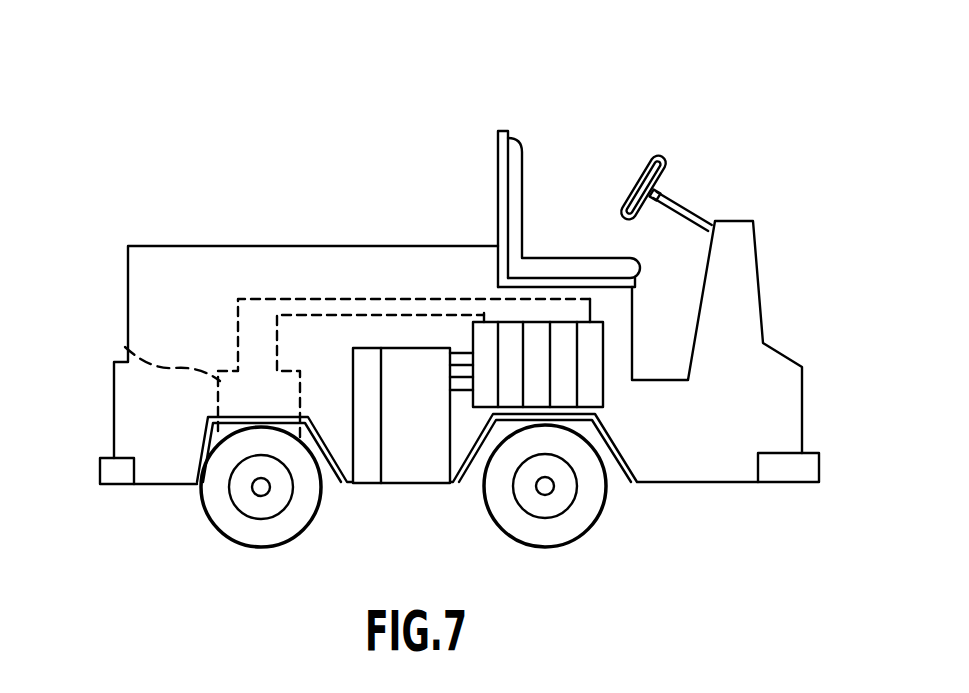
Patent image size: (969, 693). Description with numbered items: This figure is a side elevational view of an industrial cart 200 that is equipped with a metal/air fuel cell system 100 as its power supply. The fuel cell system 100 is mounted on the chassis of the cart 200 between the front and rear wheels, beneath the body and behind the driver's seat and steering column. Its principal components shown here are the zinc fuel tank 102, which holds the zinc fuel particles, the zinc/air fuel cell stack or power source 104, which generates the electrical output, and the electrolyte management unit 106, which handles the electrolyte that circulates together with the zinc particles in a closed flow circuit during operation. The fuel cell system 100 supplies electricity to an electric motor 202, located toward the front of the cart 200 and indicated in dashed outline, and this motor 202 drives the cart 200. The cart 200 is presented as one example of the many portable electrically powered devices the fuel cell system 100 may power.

The zinc/air fuel cell system 100 is at (483, 369).
The zinc fuel tank 102 is at (419, 472).
The zinc/air fuel cell stack 104 is at (597, 398).
The electrolyte management unit 106 is at (367, 472).
The industrial cart 200 is at (748, 155).
The electric motor 202 is at (128, 350).